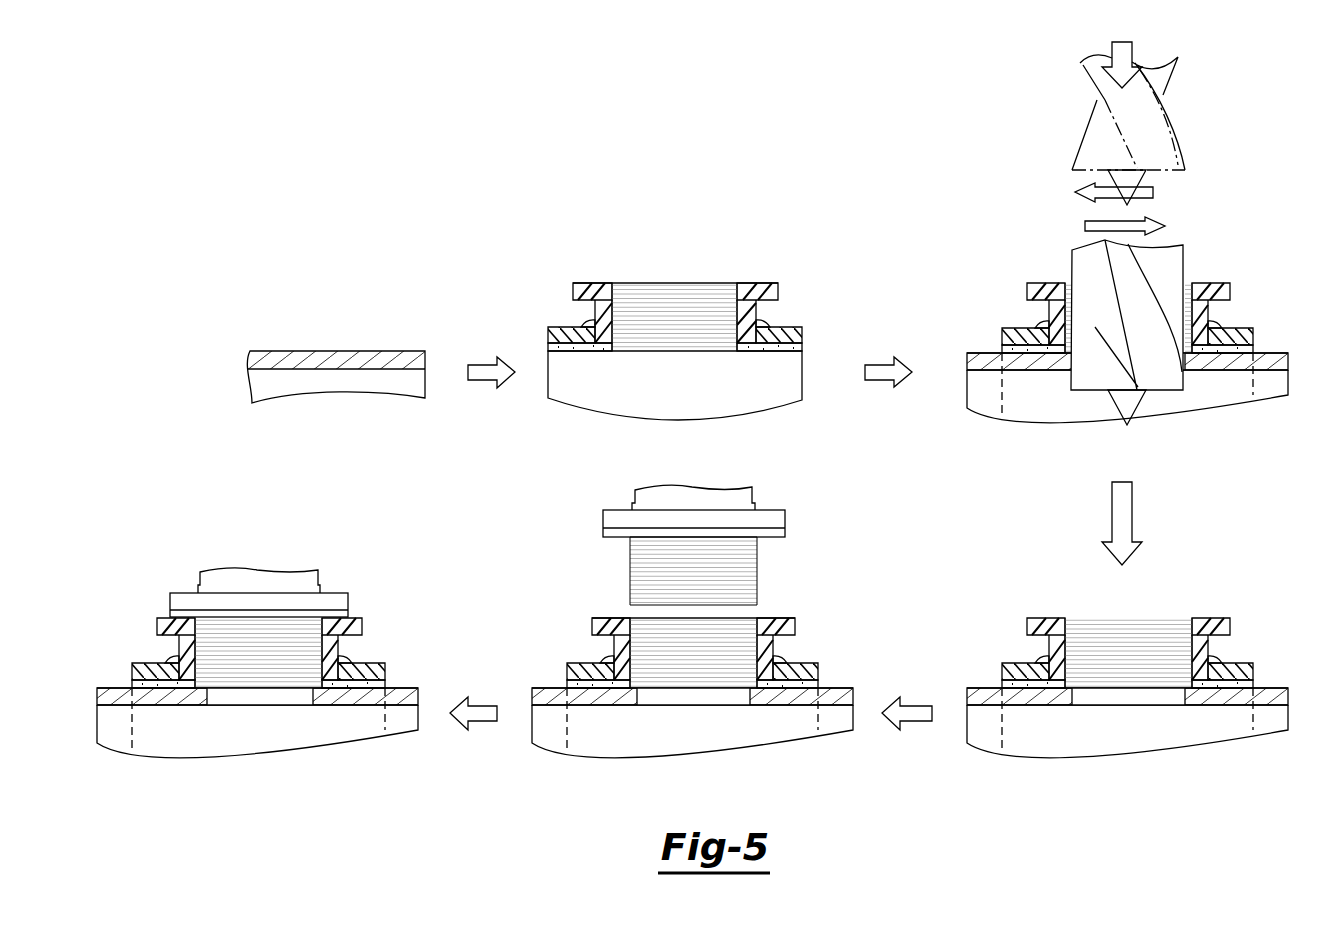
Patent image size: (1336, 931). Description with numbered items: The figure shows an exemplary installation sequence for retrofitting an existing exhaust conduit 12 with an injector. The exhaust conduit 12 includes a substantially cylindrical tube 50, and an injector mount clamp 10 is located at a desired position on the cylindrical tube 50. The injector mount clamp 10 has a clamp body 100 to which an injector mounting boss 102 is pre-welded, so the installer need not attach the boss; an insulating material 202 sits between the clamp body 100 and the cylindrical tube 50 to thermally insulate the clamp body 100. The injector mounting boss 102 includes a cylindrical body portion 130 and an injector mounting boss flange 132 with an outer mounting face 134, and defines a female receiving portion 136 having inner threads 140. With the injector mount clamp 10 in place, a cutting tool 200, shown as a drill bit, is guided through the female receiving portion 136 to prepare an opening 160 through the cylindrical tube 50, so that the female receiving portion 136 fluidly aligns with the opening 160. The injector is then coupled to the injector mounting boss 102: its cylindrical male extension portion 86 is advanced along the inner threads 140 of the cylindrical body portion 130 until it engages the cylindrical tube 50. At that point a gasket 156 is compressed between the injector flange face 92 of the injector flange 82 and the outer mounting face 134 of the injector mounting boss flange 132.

The injector mount clamp 10 is at (710, 248).
The exhaust conduit 12 is at (370, 351).
The cylindrical tube 50 is at (716, 555).
The injector flange 82 is at (461, 539).
The cylindrical male extension portion 86 is at (506, 596).
The injector flange face 92 is at (654, 538).
The clamp body 100 is at (700, 478).
The injector mounting boss 102 is at (782, 451).
The cylindrical body portion 130 is at (574, 481).
The injector mounting boss flange 132 is at (579, 429).
The outer mounting face 134 is at (645, 598).
The female receiving portion 136 is at (909, 280).
The inner threads 140 is at (907, 684).
The gasket 156 is at (493, 563).
The opening 160 is at (695, 571).
The cutting tool 200 is at (1074, 233).
The insulating material 202 is at (692, 509).